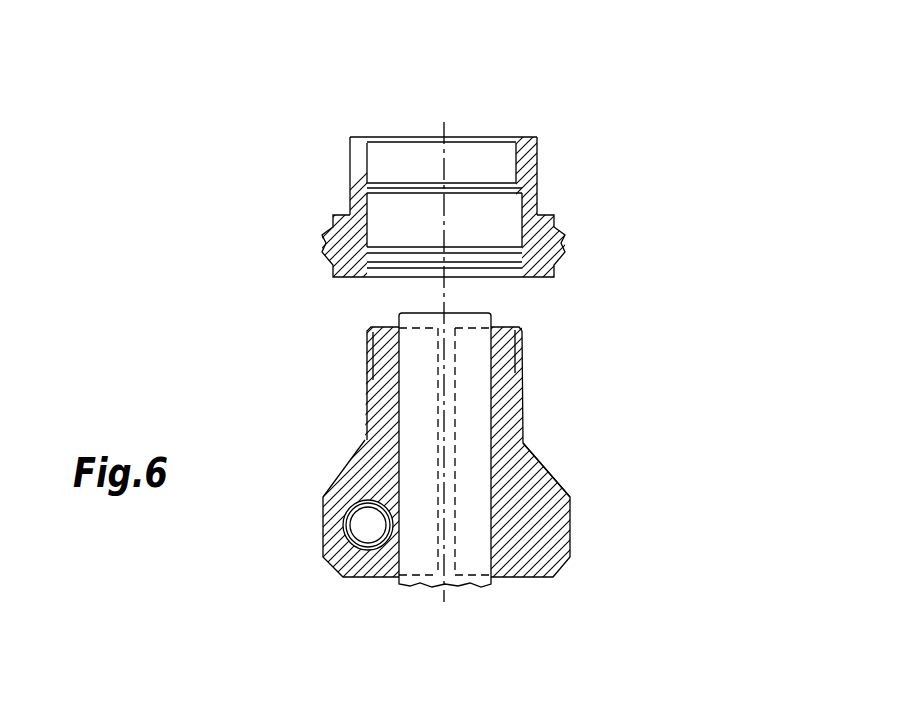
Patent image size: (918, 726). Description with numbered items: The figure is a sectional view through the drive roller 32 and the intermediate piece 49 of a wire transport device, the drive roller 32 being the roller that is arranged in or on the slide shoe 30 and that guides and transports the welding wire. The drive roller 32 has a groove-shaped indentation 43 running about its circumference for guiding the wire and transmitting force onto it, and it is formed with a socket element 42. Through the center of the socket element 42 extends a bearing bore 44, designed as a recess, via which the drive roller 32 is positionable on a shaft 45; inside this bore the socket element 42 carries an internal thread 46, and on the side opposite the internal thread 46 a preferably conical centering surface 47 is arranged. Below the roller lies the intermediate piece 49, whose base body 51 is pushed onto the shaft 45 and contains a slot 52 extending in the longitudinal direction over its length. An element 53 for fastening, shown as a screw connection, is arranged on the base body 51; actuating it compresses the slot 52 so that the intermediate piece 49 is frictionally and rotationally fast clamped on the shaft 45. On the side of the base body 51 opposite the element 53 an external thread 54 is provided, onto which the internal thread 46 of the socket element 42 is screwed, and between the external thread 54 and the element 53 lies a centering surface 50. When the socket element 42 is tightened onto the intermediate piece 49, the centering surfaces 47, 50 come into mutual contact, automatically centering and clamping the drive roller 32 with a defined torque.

The slide shoe 30 is at (595, 142).
The drive roller 32 is at (272, 207).
The socket element 42 is at (354, 160).
The groove-shaped indentation 43 is at (565, 251).
The bearing bore 44 is at (372, 220).
The shaft 45 is at (467, 552).
The internal thread 46 is at (382, 152).
The centering surface 47 is at (529, 273).
The intermediate piece 49 is at (587, 537).
The centering surface 50 is at (541, 471).
The base body 51 is at (358, 491).
The slot 52 is at (440, 553).
The fastening element 53 is at (368, 527).
The external thread 54 is at (359, 367).